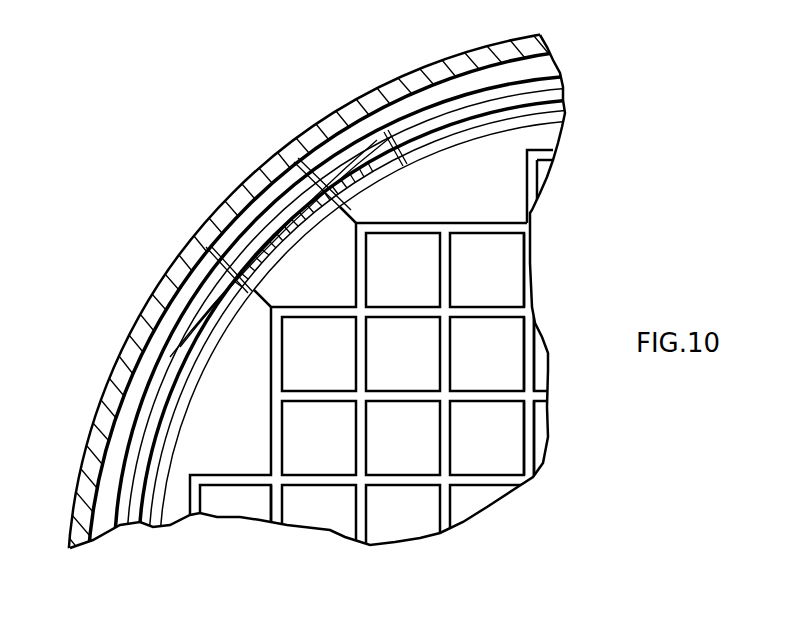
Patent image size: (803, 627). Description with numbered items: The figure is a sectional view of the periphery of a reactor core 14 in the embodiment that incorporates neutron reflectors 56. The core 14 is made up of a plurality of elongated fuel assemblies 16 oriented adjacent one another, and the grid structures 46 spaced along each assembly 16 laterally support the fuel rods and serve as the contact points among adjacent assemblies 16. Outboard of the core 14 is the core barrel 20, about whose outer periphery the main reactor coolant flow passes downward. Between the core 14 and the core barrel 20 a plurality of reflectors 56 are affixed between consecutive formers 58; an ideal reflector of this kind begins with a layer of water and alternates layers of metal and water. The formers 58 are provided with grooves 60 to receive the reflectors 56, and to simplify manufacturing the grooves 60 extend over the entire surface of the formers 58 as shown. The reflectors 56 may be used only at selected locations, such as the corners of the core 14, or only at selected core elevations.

The reactor core 14 is at (399, 386).
The fuel assembly 16 is at (513, 277).
The core barrel 20 is at (444, 68).
The grid structure 46 is at (527, 330).
The reflector 56 is at (370, 180).
The former 58 is at (262, 213).
The groove 60 is at (560, 92).